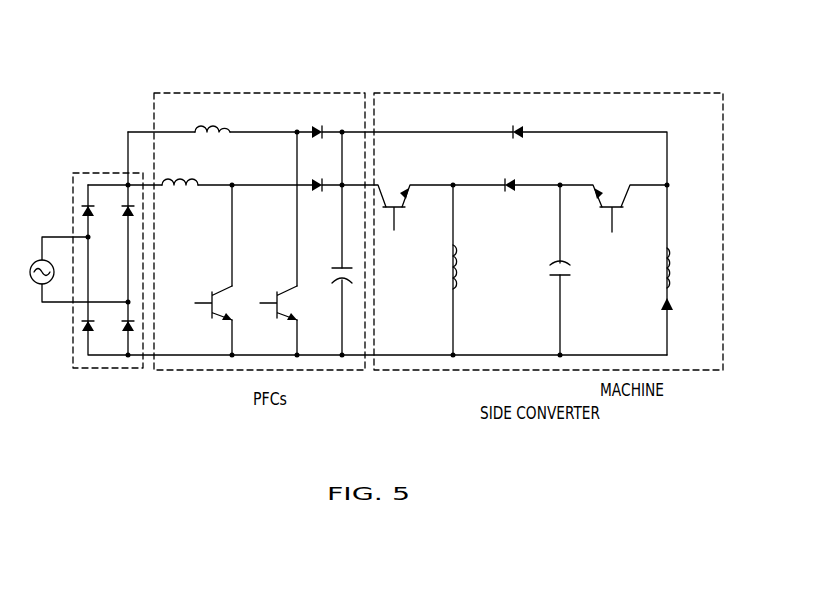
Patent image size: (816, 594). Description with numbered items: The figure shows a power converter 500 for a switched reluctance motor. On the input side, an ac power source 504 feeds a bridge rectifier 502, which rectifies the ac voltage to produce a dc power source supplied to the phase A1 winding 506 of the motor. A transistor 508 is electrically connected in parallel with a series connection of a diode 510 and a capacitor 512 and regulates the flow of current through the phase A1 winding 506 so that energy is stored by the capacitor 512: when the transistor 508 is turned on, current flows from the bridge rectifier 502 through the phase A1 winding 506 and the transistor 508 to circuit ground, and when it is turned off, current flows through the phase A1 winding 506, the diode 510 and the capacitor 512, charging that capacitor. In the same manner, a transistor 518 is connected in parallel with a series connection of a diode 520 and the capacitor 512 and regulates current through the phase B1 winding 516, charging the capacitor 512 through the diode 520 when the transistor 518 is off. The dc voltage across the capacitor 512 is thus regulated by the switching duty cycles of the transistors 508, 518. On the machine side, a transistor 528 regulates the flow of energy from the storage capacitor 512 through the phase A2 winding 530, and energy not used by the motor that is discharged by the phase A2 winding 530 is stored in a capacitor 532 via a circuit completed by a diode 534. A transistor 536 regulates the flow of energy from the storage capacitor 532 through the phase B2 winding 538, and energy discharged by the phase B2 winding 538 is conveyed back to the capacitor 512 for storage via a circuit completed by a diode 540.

The power converter 500 is at (450, 64).
The bridge rectifier 502 is at (110, 163).
The ac power source 504 is at (37, 288).
The phase A1 winding 506 is at (192, 190).
The transistor 508 is at (222, 287).
The diode 510 is at (306, 194).
The capacitor 512 is at (338, 266).
The phase B1 winding 516 is at (222, 140).
The transistor 518 is at (290, 287).
The diode 520 is at (306, 140).
The transistor 528 is at (408, 198).
The phase A2 winding 530 is at (449, 272).
The capacitor 532 is at (556, 280).
The diode 534 is at (508, 192).
The transistor 536 is at (627, 196).
The phase B2 winding 538 is at (663, 272).
The diode 540 is at (521, 138).